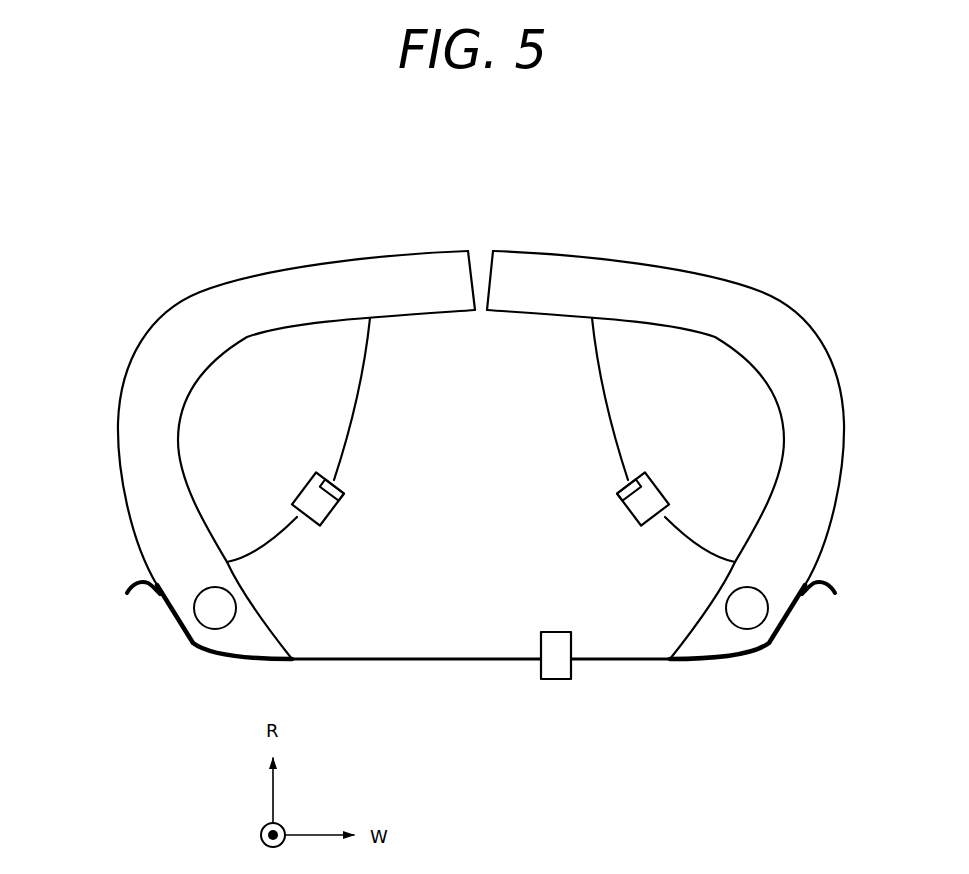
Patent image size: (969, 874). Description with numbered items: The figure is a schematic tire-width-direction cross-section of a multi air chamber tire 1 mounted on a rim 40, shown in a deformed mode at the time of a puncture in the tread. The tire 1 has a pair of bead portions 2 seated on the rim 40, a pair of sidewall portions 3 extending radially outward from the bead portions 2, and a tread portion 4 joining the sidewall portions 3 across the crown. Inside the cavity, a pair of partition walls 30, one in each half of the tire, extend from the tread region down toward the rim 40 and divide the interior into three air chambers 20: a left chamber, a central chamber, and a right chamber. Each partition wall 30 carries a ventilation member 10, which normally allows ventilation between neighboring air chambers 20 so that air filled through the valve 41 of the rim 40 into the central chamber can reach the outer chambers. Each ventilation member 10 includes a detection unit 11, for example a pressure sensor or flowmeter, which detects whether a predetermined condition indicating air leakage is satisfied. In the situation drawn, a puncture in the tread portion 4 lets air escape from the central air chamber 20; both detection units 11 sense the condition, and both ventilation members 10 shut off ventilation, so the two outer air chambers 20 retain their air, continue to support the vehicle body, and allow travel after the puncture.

The multi air chamber tire 1 is at (447, 449).
The bead portion 2 is at (144, 611).
The sidewall portion 3 is at (107, 425).
The tread portion 4 is at (410, 249).
The ventilation member 10 is at (480, 504).
The detection unit 11 is at (336, 482).
The air chamber 20 is at (307, 405).
The partition wall 30 is at (368, 356).
The rim 40 is at (428, 663).
The valve 41 is at (557, 682).